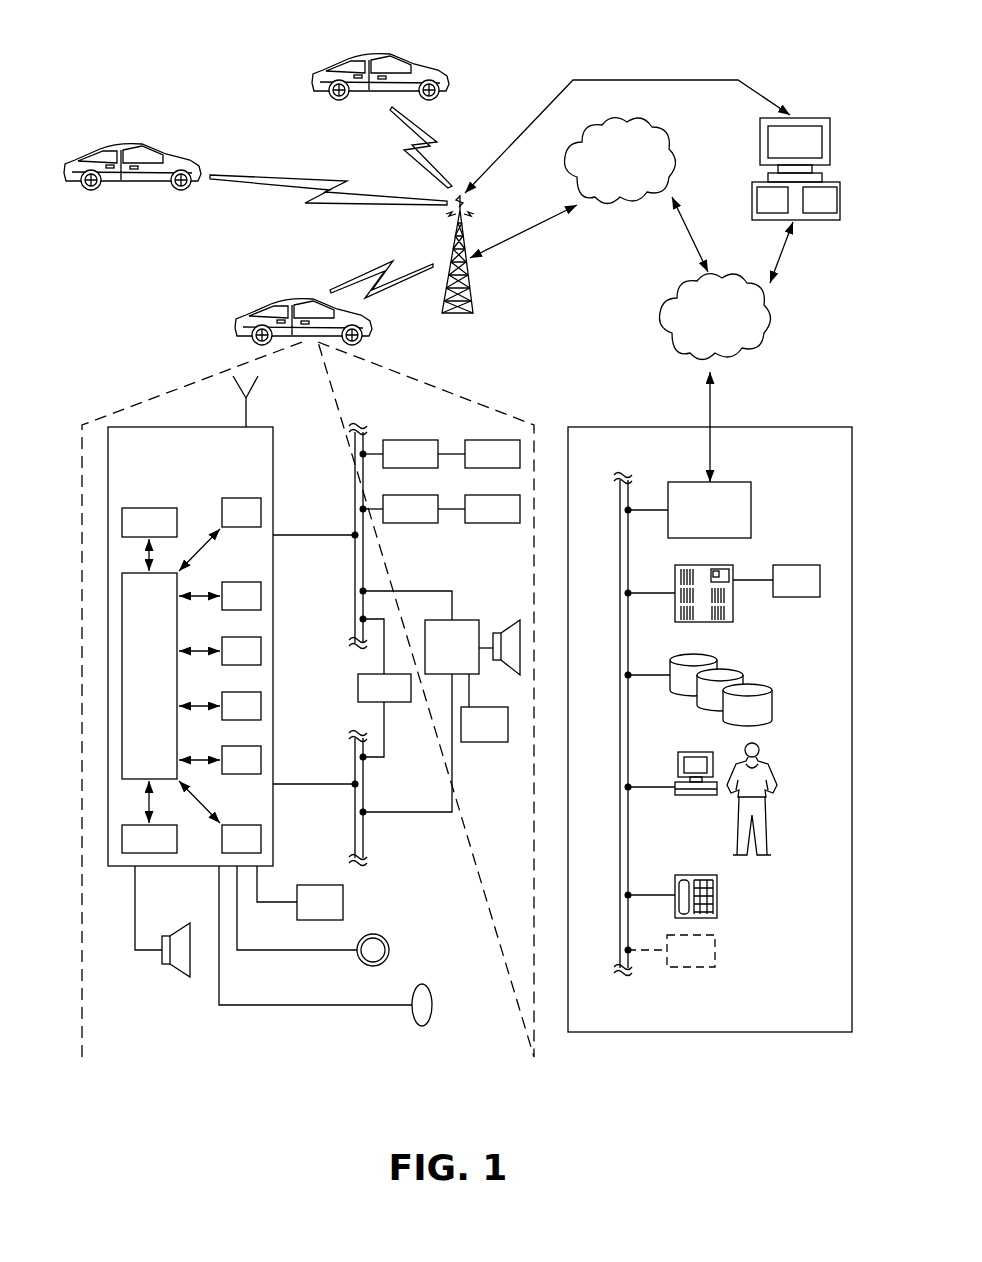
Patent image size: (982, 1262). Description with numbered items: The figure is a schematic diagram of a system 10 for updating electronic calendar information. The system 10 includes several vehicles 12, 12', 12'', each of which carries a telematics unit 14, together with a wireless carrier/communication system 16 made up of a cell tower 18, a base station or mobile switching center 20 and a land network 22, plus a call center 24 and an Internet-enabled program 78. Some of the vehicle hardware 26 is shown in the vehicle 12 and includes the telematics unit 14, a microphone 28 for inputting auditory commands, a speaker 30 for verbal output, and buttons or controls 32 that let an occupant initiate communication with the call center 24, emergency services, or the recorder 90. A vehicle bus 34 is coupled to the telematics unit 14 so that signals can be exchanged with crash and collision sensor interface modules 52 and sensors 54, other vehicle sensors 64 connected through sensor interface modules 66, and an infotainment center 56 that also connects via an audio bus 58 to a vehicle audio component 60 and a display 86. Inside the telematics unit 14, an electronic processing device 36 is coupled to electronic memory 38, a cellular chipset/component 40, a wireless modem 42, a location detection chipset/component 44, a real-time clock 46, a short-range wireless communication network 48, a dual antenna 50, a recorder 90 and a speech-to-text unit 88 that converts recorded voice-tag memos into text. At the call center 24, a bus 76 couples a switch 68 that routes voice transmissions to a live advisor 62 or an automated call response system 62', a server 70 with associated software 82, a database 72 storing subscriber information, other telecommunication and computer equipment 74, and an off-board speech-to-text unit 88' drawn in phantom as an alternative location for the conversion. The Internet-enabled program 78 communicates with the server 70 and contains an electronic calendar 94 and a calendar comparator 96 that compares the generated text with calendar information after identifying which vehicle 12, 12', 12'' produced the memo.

The system 10 is at (150, 80).
The vehicle 12 is at (297, 300).
The vehicle 12' is at (125, 144).
The vehicle 12'' is at (374, 55).
The telematics unit 14 is at (273, 646).
The wireless carrier/communication system 16 is at (592, 293).
The cell tower 18 is at (450, 250).
The base station and/or mobile switching center 20 is at (614, 169).
The land network 22 is at (705, 332).
The call center 24 is at (733, 1032).
The vehicle hardware 26 is at (318, 1057).
The microphone 28 is at (432, 1003).
The speaker 30 is at (182, 975).
The buttons, knobs, switches, keyboards, and/or controls 32 is at (389, 948).
The vehicle bus 34 is at (365, 561).
The electronic processing device 36 is at (142, 681).
The electronic memory 38 is at (141, 851).
The cellular chipset/component 40 is at (141, 534).
The wireless modem 42 is at (233, 608).
The location detection chipset/component 44 is at (233, 663).
The real-time clock 46 is at (233, 718).
The short-range wireless communication network 48 is at (233, 772).
The dual antenna 50 is at (247, 414).
The crash and/or collision sensor interface module 52 is at (402, 466).
The sensor 54 is at (484, 466).
The infotainment center 56 is at (376, 700).
The audio bus 58 is at (355, 799).
The vehicle audio component 60 is at (444, 657).
The live advisor 62 is at (787, 799).
The automated call response system 62' is at (672, 807).
The vehicle sensor 64 is at (484, 521).
The sensor interface module 66 is at (402, 521).
The switch 68 is at (701, 521).
The server 70 is at (733, 612).
The database 72 is at (772, 705).
The telecommunication and computer equipment 74 is at (717, 893).
The network connection or bus 76 is at (620, 637).
The Internet-enabled program 78 is at (762, 138).
The software 82 is at (788, 592).
The display 86 is at (476, 735).
The speech-to-text unit 88 is at (220, 817).
The speech-to-text unit 88' is at (711, 951).
The recorder 90 is at (233, 524).
The electronic calendar 94 is at (764, 212).
The calendar comparator 96 is at (812, 212).